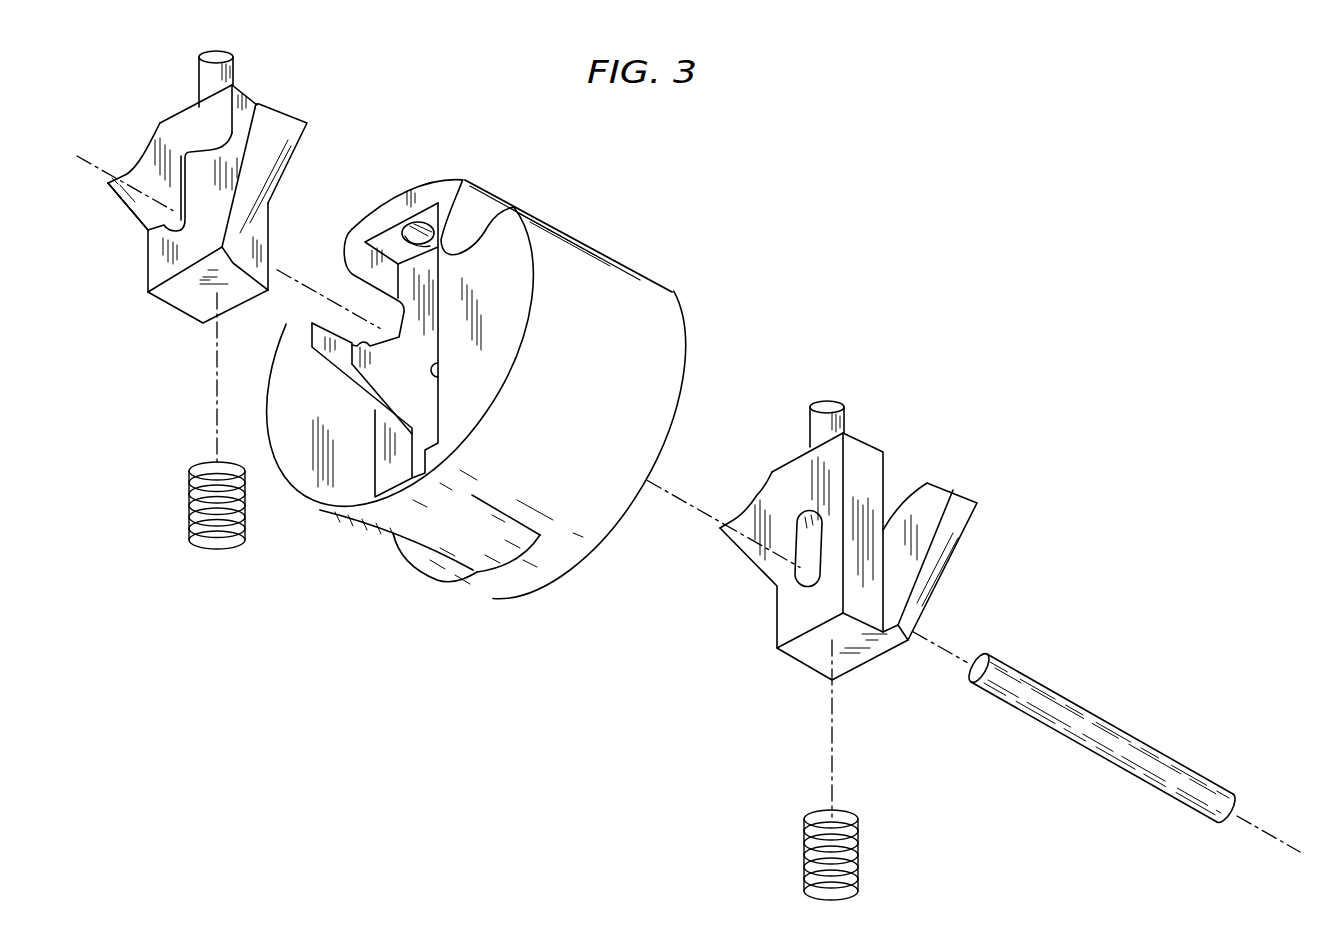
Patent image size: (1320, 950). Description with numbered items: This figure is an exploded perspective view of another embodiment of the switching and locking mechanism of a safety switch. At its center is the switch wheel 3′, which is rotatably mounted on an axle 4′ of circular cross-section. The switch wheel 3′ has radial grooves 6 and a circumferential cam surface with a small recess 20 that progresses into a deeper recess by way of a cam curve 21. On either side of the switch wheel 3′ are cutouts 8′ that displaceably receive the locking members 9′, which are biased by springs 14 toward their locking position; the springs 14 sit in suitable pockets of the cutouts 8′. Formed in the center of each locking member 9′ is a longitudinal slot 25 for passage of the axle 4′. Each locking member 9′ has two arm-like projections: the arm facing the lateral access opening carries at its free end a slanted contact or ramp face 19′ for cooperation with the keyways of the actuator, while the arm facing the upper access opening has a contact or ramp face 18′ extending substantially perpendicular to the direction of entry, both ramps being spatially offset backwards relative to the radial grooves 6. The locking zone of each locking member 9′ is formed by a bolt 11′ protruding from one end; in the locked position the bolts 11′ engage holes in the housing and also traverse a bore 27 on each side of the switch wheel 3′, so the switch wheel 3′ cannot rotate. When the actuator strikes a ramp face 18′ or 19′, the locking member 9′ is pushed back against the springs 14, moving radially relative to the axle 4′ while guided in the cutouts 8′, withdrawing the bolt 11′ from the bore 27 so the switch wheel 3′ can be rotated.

The switch wheel 3′ is at (612, 310).
The axle 4′ is at (1042, 697).
The radial grooves 6 is at (482, 210).
The cutouts 8′ is at (388, 377).
The locking members 9′ is at (190, 300).
The bolt 11′ is at (220, 63).
The springs 14 is at (803, 870).
The ramp face 18′ is at (115, 177).
The slanted contact or ramp face 19′ is at (290, 103).
The small recess 20 is at (477, 545).
The cam curve 21 is at (420, 552).
The longitudinal slot 25 is at (800, 578).
The bore 27 is at (395, 232).